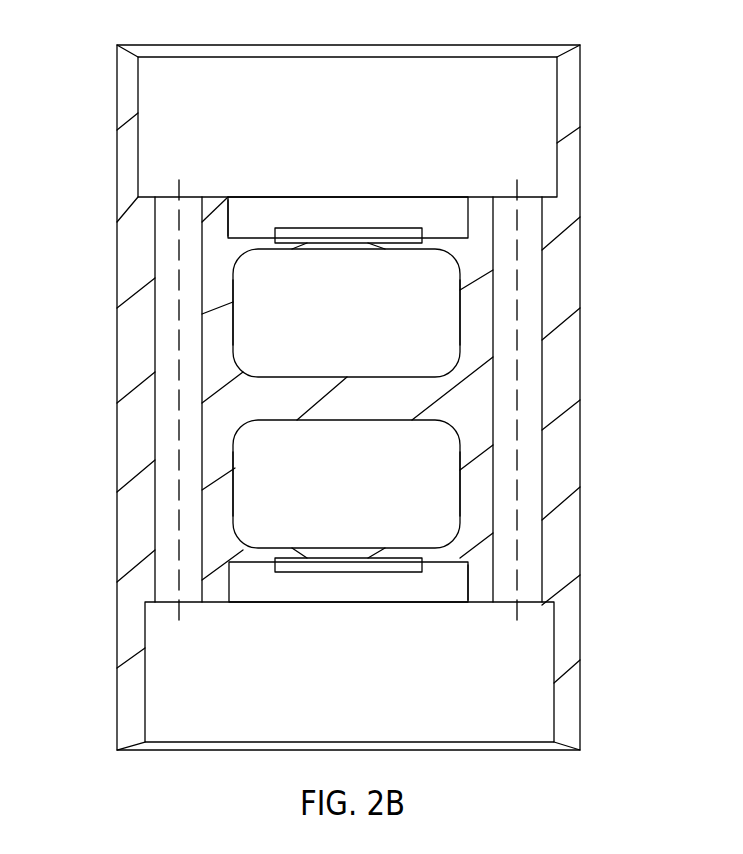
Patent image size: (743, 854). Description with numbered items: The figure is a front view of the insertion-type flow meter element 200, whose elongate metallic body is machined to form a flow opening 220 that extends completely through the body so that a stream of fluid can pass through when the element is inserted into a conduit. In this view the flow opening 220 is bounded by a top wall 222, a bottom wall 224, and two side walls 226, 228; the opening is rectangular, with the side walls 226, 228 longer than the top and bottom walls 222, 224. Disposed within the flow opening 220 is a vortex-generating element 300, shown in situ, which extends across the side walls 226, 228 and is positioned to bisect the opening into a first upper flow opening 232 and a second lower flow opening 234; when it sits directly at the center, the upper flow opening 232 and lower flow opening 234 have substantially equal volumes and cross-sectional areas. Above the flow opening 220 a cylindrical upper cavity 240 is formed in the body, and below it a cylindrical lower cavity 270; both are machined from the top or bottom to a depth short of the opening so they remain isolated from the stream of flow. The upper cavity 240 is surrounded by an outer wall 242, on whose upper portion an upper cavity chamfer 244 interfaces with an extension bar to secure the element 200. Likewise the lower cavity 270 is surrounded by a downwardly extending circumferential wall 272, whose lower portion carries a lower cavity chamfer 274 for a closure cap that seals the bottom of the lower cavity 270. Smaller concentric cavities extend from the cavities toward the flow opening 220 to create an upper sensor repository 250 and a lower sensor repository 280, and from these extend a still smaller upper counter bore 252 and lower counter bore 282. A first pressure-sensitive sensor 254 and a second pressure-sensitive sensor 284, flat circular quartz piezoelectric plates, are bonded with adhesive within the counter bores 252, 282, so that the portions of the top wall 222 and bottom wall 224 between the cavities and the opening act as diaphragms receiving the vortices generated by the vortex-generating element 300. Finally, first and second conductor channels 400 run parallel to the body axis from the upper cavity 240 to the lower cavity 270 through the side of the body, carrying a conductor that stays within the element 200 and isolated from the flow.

The insertion-type flow meter element 200 is at (705, 71).
The flow opening 220 is at (355, 330).
The top wall 222 is at (386, 250).
The bottom wall 224 is at (378, 548).
The side wall 226 is at (235, 304).
The side wall 228 is at (457, 318).
The first upper flow opening 232 is at (283, 352).
The second lower flow opening 234 is at (270, 516).
The upper cavity 240 is at (352, 138).
The outer wall 242 is at (565, 107).
The upper cavity chamfer 244 is at (562, 50).
The upper sensor repository 250 is at (355, 227).
The upper counter bore 252 is at (385, 230).
The first pressure-sensitive sensor 254 is at (275, 229).
The lower cavity 270 is at (347, 675).
The circumferential wall 272 is at (573, 657).
The lower cavity chamfer 274 is at (556, 752).
The lower sensor repository 280 is at (348, 582).
The lower counter bore 282 is at (310, 567).
The second pressure-sensitive sensor 284 is at (421, 572).
The vortex-generating element 300 is at (377, 414).
The conductor channels 400 is at (160, 376).